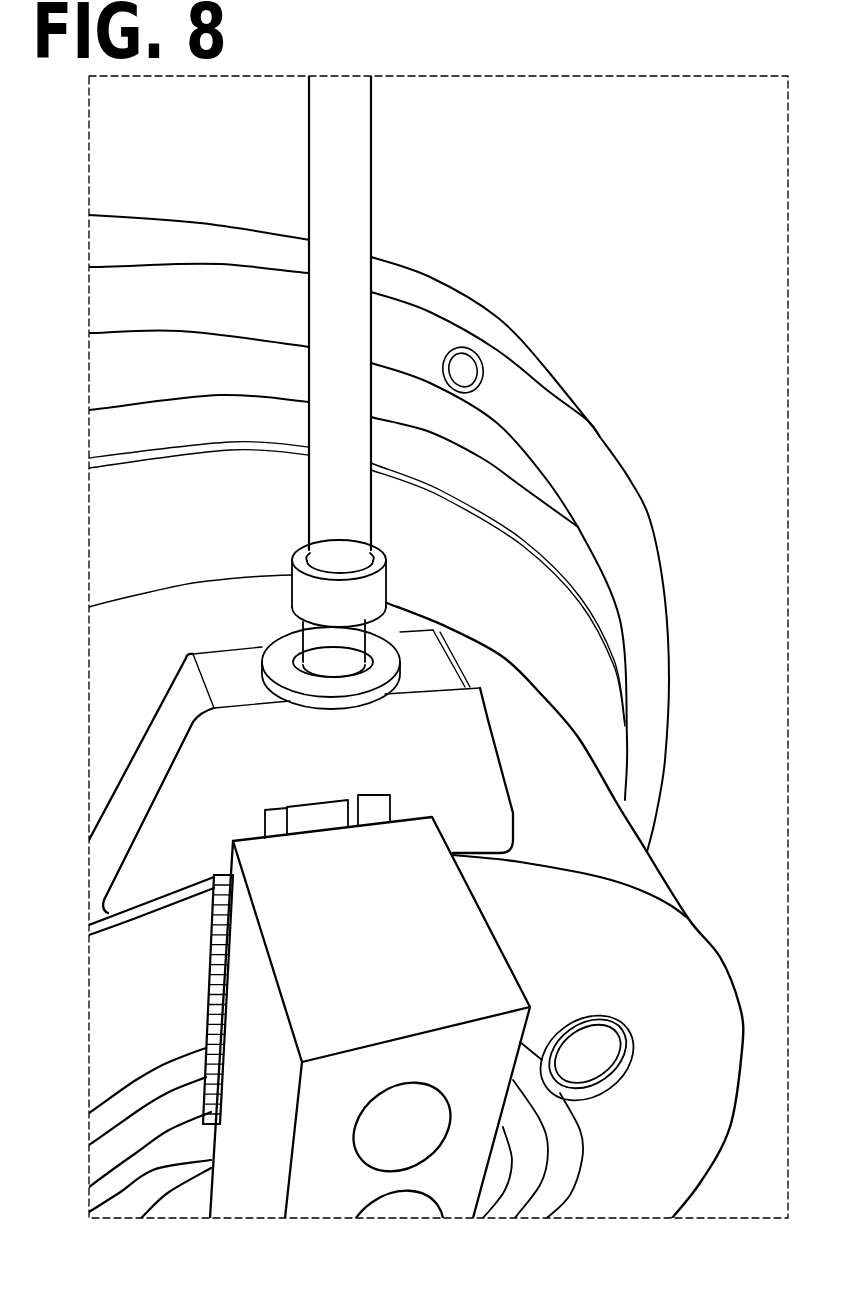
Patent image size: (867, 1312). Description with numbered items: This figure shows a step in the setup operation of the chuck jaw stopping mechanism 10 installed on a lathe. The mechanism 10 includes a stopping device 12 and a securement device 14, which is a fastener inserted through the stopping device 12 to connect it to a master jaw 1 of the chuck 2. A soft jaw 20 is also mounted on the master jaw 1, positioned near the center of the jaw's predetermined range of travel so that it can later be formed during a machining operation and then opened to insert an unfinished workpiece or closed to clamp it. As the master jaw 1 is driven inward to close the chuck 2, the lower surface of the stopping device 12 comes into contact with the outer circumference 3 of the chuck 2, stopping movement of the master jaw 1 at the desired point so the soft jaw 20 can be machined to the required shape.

The master jaw 1 is at (214, 900).
The chuck 2 is at (183, 587).
The outer circumference 3 is at (327, 816).
The chuck jaw stopping mechanism 10 is at (562, 655).
The stopping device 12 is at (174, 672).
The securement device 14 is at (295, 562).
The soft jaw 20 is at (517, 975).